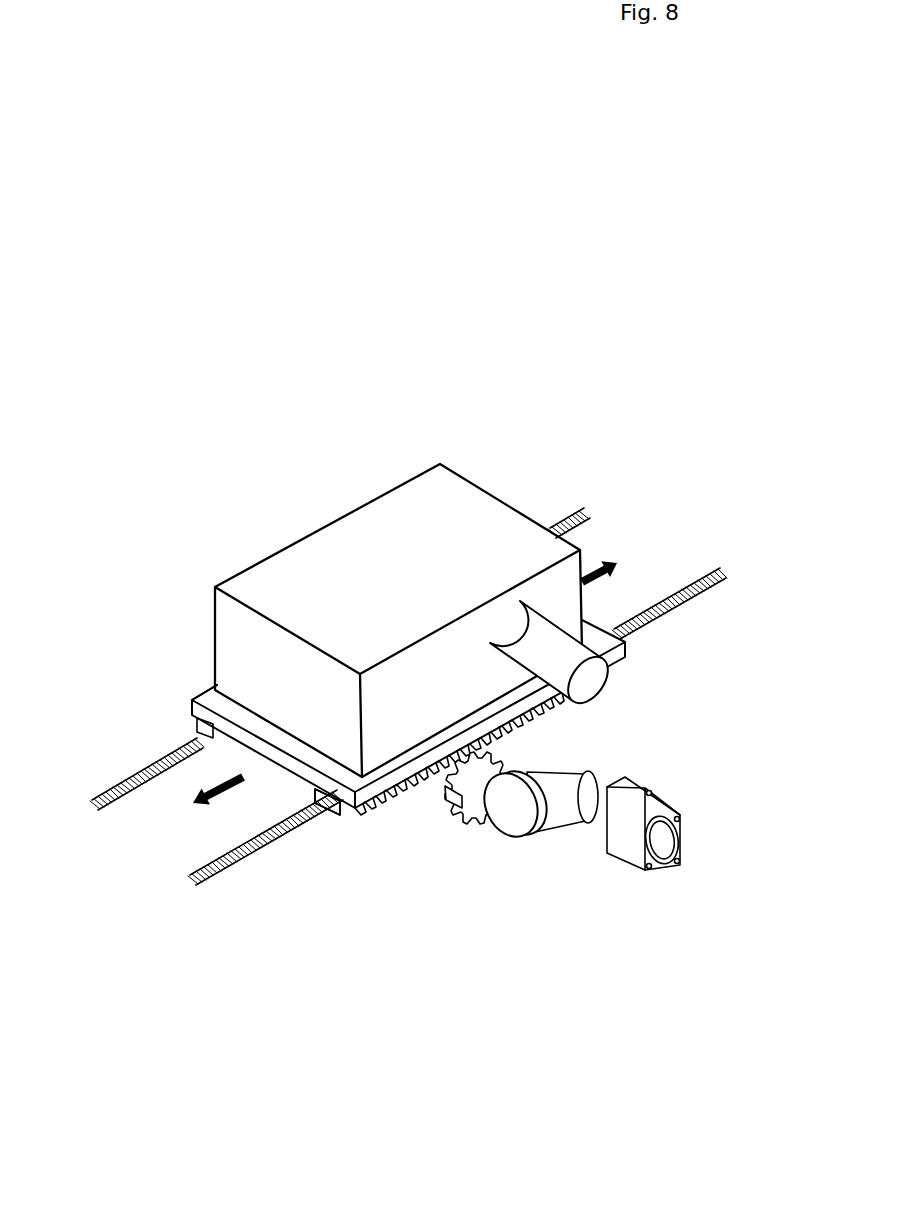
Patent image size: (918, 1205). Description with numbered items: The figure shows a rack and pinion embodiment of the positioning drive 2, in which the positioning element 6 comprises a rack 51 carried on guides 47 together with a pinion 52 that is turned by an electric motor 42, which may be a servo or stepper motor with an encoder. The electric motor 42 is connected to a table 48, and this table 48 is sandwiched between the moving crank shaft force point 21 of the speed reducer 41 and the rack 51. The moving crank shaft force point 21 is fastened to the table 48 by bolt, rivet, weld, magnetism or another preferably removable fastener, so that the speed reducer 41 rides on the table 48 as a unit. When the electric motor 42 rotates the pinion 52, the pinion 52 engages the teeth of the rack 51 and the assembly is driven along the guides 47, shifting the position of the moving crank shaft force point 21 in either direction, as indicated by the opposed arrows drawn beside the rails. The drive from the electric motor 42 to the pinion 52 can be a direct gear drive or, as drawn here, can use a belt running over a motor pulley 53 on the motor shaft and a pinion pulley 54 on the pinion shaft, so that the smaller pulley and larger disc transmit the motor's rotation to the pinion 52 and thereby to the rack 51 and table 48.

The positioning drive 2 is at (407, 1005).
The positioning element 6 is at (213, 698).
The moving crank shaft force point 21 is at (595, 670).
The speed reducer 41 is at (333, 637).
The electric motor 42 is at (648, 805).
The slide 47 is at (580, 538).
The table 48 is at (277, 730).
The rack 51 is at (343, 818).
The pinion 52 is at (437, 812).
The motor pulley 53 is at (587, 765).
The pinion pulley 54 is at (523, 830).